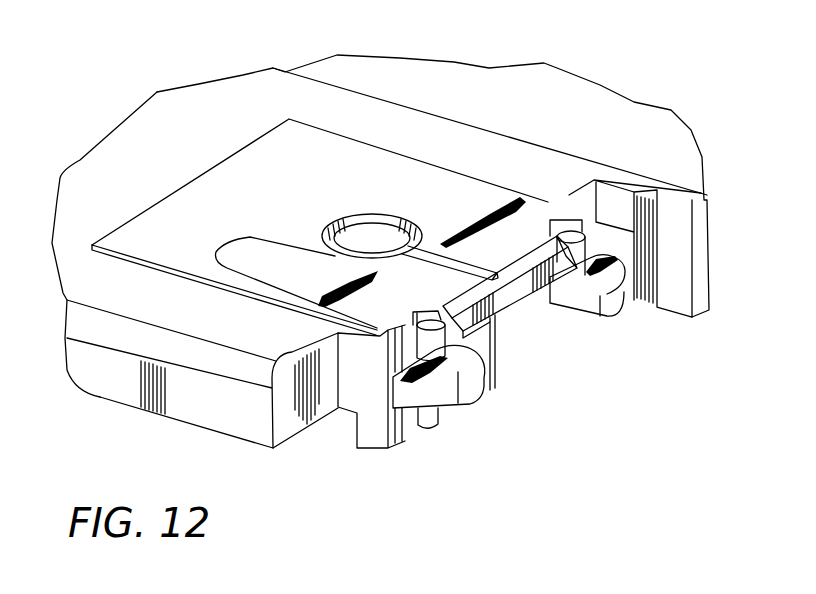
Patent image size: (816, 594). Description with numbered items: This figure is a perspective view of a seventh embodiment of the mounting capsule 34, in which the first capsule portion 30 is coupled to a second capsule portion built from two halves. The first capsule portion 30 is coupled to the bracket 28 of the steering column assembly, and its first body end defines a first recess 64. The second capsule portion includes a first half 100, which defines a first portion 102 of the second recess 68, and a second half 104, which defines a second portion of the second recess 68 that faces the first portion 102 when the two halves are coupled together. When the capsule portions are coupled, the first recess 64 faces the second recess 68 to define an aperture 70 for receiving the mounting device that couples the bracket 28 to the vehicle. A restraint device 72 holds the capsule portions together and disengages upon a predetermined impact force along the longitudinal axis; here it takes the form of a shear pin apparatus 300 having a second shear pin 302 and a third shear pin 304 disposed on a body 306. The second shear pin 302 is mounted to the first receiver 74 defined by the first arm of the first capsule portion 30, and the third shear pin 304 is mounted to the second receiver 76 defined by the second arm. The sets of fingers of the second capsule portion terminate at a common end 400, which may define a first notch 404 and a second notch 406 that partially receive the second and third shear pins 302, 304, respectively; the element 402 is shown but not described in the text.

The bracket 28 is at (132, 414).
The first capsule portion 30 is at (157, 238).
The mounting capsule 34 is at (383, 462).
The first recess 64 is at (372, 214).
The second recess 68 is at (389, 222).
The aperture 70 is at (324, 223).
The restraint device 72 is at (516, 315).
The first receiver 74 is at (585, 330).
The second receiver 76 is at (478, 408).
The first half 100 is at (486, 199).
The first portion 102 is at (405, 242).
The second half 104 is at (283, 289).
The shear pin apparatus 300 is at (534, 320).
The second shear pin 302 is at (592, 262).
The third shear pin 304 is at (434, 422).
The body 306 is at (507, 321).
The common end 400 is at (523, 252).
The bracket leg 402 is at (496, 326).
The first notch 404 is at (556, 215).
The second notch 406 is at (417, 340).